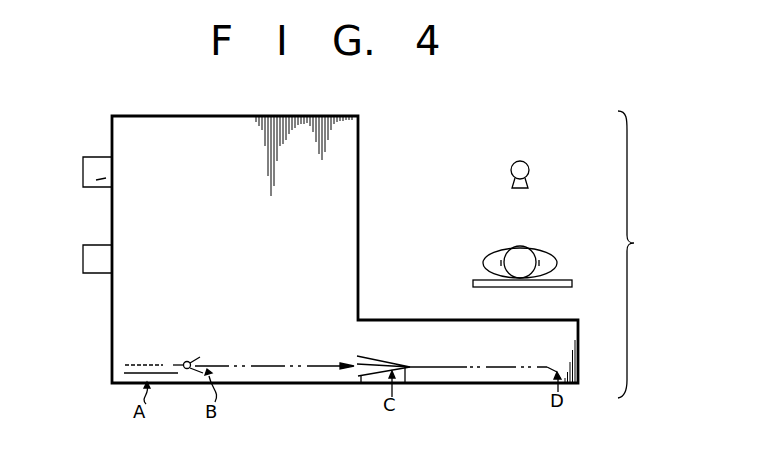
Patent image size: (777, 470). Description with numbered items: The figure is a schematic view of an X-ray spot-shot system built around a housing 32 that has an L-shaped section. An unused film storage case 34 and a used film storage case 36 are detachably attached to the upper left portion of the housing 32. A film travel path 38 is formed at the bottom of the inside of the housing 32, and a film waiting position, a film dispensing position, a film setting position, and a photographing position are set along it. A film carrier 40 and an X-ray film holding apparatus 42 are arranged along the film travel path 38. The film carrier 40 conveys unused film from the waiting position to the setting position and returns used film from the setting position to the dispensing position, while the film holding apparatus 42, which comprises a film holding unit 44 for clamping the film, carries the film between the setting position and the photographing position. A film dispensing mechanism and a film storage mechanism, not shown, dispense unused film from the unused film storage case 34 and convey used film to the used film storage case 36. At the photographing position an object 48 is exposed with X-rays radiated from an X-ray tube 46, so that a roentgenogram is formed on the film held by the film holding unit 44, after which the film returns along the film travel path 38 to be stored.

The housing 32 is at (118, 290).
The unused film storage case 34 is at (97, 265).
The used film storage case 36 is at (96, 180).
The film travel path 38 is at (273, 366).
The film carrier 40 is at (189, 369).
The X-ray film holding apparatus 42 is at (407, 382).
The film holding unit 44 is at (362, 378).
The X-ray tube 46 is at (519, 190).
The object 48 is at (555, 258).